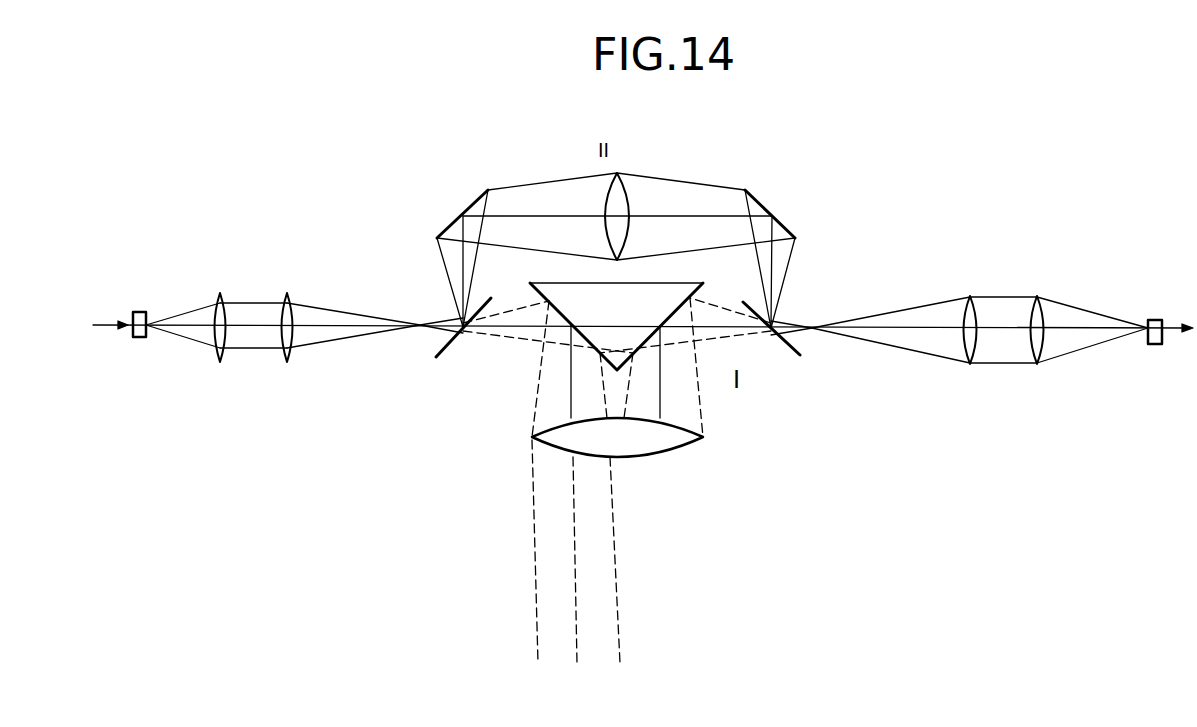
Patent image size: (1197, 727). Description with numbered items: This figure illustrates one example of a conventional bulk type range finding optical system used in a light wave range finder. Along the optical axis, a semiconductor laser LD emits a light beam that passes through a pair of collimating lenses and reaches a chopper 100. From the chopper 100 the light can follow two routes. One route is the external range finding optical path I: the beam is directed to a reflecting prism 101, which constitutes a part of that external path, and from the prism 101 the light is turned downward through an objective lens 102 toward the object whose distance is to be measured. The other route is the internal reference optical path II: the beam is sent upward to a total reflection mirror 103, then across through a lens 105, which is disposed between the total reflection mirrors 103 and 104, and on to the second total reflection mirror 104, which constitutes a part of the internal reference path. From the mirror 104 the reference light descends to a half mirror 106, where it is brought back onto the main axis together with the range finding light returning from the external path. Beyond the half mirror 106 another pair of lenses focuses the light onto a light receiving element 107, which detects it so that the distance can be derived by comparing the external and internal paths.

The semiconductor laser LD is at (141, 312).
The chopper 100 is at (453, 340).
The reflecting prism 101 is at (637, 331).
The objective lens 102 is at (657, 447).
The total reflection mirror 103 is at (467, 210).
The total reflection mirror 104 is at (771, 208).
The lens 105 is at (626, 195).
The half mirror 106 is at (790, 352).
The light receiving element 107 is at (1155, 320).